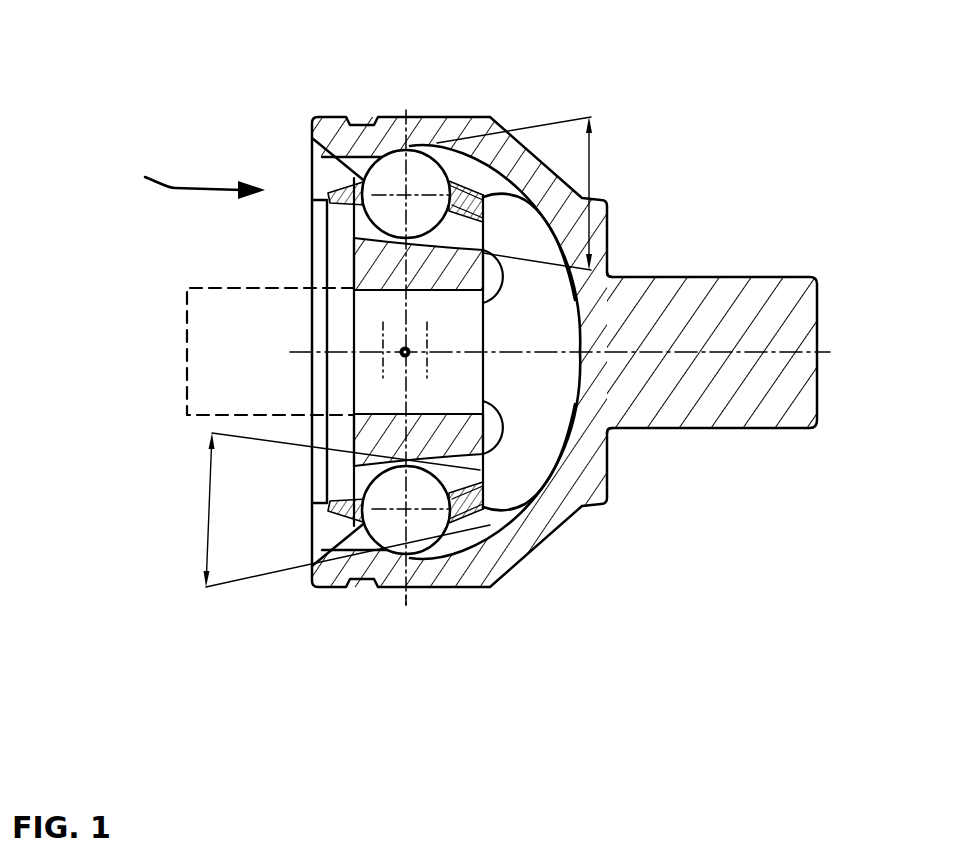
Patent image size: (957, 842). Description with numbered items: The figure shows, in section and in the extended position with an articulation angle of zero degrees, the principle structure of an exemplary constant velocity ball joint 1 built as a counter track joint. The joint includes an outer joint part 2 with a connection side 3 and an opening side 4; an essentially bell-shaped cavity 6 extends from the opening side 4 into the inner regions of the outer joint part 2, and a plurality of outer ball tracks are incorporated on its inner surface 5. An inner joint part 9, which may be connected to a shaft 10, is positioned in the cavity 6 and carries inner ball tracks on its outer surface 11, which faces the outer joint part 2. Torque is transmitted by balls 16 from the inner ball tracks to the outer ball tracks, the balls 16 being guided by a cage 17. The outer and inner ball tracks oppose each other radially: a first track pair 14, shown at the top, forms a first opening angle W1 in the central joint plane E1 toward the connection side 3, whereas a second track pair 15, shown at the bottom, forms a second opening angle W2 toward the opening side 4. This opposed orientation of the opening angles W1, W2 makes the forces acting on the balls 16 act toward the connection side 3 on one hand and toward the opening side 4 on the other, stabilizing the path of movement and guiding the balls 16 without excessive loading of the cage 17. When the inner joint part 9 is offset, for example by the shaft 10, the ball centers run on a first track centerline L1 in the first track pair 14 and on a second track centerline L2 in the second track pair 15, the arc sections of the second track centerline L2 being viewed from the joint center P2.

The constant velocity ball joint 1 is at (743, 133).
The outer joint part 2 is at (485, 117).
The connection side 3 is at (723, 277).
The opening side 4 is at (308, 163).
The inner surface 5 is at (548, 304).
The cavity 6 is at (557, 390).
The inner joint part 9 is at (373, 267).
The shaft 10 is at (203, 415).
The outer surface 11 is at (370, 235).
The first track pair 14 is at (178, 181).
The second track pair 15 is at (504, 493).
The balls 16 is at (418, 172).
The cage 17 is at (443, 520).
The first track centerline L1 is at (392, 200).
The second track centerline L2 is at (410, 512).
The central joint plane E1 is at (400, 605).
The joint center P2 is at (403, 355).
The first opening angle W1 is at (592, 183).
The second opening angle W2 is at (209, 518).